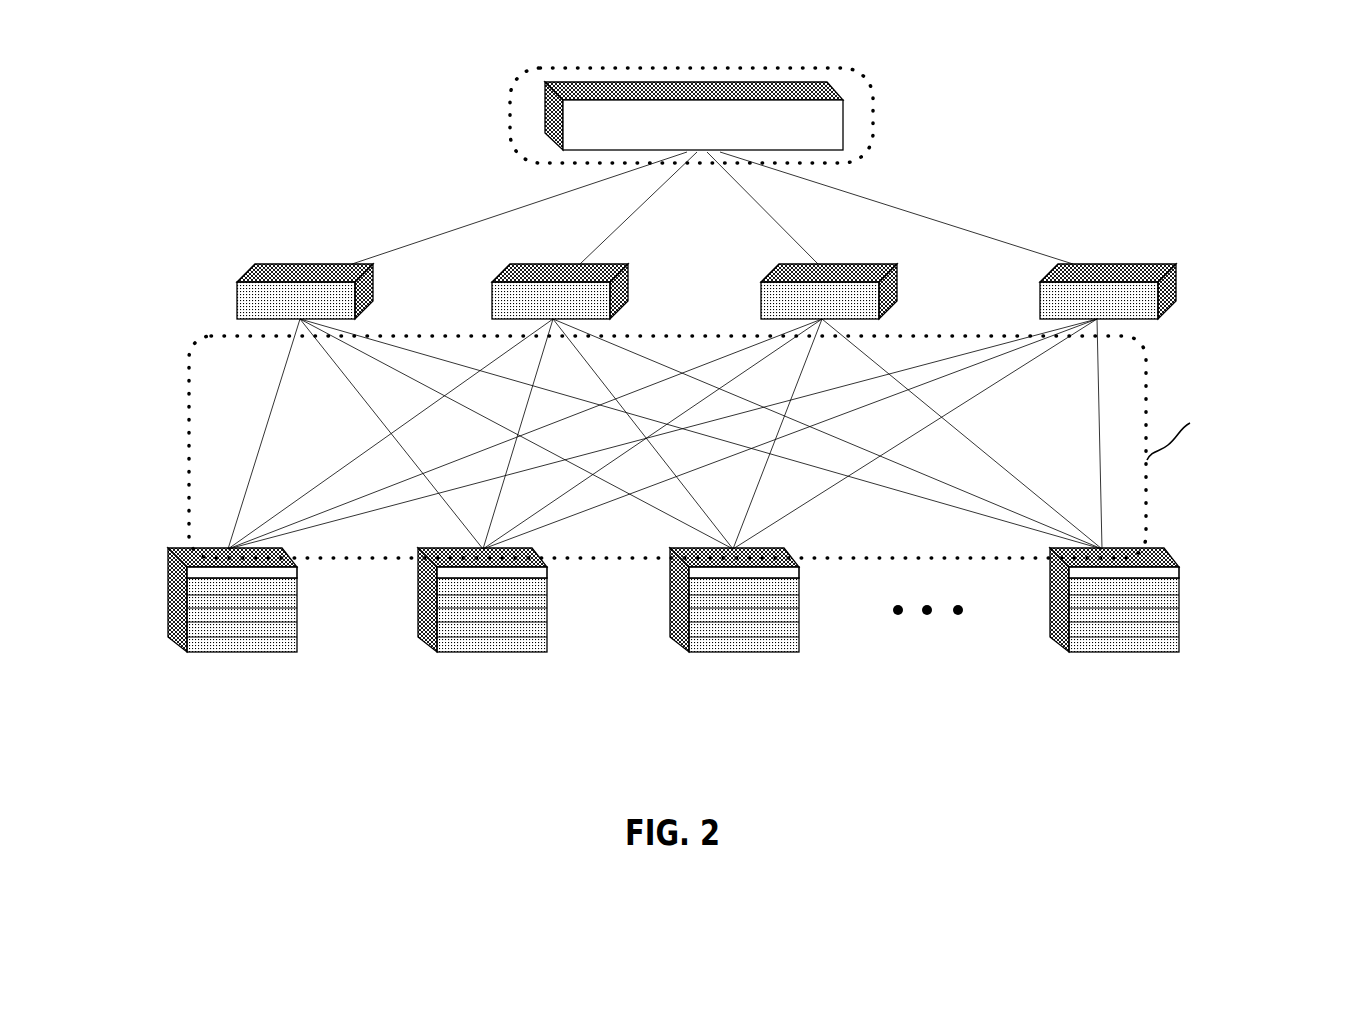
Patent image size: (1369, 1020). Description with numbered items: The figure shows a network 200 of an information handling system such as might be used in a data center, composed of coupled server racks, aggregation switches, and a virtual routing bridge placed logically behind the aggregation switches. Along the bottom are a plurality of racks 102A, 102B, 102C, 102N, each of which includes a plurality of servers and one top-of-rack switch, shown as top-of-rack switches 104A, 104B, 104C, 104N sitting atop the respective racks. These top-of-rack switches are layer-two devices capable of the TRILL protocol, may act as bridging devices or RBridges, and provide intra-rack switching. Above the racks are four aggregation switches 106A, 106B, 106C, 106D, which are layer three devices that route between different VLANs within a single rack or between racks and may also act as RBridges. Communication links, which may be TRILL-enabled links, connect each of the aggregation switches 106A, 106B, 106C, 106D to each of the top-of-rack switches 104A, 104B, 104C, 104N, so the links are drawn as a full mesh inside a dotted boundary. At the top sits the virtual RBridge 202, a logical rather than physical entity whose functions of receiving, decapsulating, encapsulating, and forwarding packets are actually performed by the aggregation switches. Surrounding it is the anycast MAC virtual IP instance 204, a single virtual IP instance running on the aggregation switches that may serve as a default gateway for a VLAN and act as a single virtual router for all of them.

The network 200 is at (705, 378).
The virtual RBridge 202 is at (694, 116).
The anycast MAC virtual IP instance 204 is at (508, 125).
The aggregation switch 106A is at (305, 291).
The aggregation switch 106B is at (560, 291).
The aggregation switch 106C is at (829, 291).
The aggregation switch 106D is at (1108, 291).
The top-of-rack switch 104A is at (297, 573).
The top-of-rack switch 104B is at (547, 573).
The top-of-rack switch 104C is at (799, 573).
The top-of-rack switch 104N is at (1179, 573).
The rack 102A is at (163, 628).
The rack 102B is at (413, 628).
The rack 102C is at (665, 628).
The rack 102N is at (1045, 628).